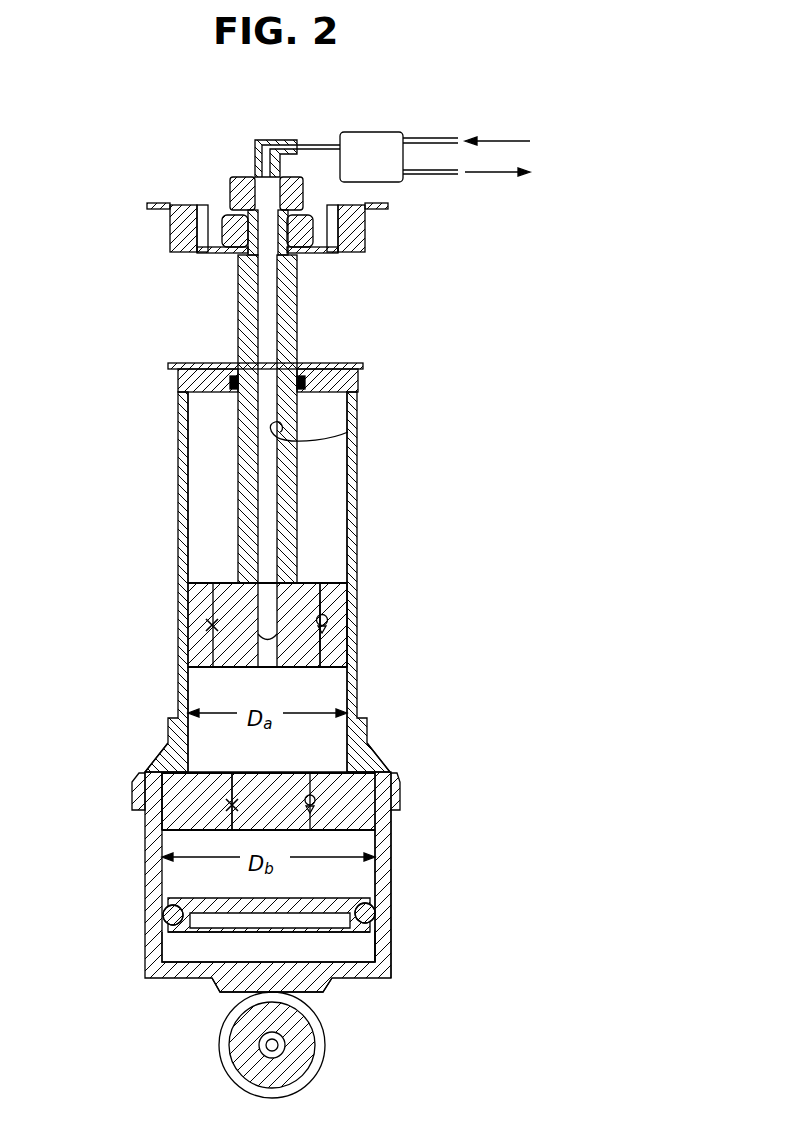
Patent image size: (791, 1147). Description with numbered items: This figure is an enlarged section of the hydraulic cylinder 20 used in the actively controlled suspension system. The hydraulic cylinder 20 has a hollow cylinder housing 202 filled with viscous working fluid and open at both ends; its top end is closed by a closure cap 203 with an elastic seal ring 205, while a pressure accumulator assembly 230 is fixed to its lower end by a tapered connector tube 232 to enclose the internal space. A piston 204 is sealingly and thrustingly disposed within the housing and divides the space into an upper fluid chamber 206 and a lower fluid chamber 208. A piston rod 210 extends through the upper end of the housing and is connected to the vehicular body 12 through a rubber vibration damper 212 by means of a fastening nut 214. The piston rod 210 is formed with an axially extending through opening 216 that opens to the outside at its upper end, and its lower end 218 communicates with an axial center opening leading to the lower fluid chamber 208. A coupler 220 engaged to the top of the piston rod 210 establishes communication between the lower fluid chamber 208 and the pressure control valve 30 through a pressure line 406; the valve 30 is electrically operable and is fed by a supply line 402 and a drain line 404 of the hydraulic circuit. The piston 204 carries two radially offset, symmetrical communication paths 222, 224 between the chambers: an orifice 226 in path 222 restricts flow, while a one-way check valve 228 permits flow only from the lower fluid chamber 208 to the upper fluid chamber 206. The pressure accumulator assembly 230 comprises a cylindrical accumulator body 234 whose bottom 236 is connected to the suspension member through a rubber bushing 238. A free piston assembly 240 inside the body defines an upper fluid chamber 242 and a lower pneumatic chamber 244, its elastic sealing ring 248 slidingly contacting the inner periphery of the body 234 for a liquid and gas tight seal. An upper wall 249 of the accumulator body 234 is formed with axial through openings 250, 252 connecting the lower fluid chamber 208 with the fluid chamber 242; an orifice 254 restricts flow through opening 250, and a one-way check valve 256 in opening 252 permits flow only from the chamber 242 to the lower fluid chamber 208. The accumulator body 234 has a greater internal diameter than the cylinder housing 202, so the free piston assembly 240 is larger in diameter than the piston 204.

The vehicular body 12 is at (292, 254).
The hydraulic cylinder 20 is at (301, 582).
The pressure control valve 30 is at (387, 142).
The cylinder housing 202 is at (360, 567).
The closure cap 203 is at (362, 366).
The piston 204 is at (340, 618).
The elastic seal ring 205 is at (233, 393).
The upper fluid chamber 206 is at (322, 517).
The lower fluid chamber 208 is at (322, 688).
The piston rod 210 is at (288, 328).
The vibration damper 212 is at (353, 237).
The fastening nut 214 is at (303, 257).
The through opening 216 is at (348, 432).
The through opening lower end 218 is at (267, 641).
The coupler 220 is at (232, 180).
The communication path 222 is at (210, 593).
The communication path 224 is at (323, 593).
The orifice 226 is at (210, 623).
The one-way check valve 228 is at (323, 633).
The pressure accumulator assembly 230 is at (134, 897).
The tapered connector tube 232 is at (370, 772).
The accumulator body 234 is at (383, 850).
The bottom 236 is at (332, 976).
The rubber bushing 238 is at (305, 1052).
The free piston assembly 240 is at (348, 897).
The upper fluid chamber 242 is at (355, 883).
The lower pneumatic chamber 244 is at (185, 952).
The elastic sealing ring 248 is at (392, 938).
The upper wall 249 is at (397, 780).
The through opening 250 is at (210, 787).
The through opening 252 is at (307, 808).
The orifice 254 is at (210, 807).
The one-way check valve 256 is at (317, 802).
The supply line 402 is at (443, 136).
The drain line 404 is at (438, 176).
The pressure line 406 is at (320, 139).